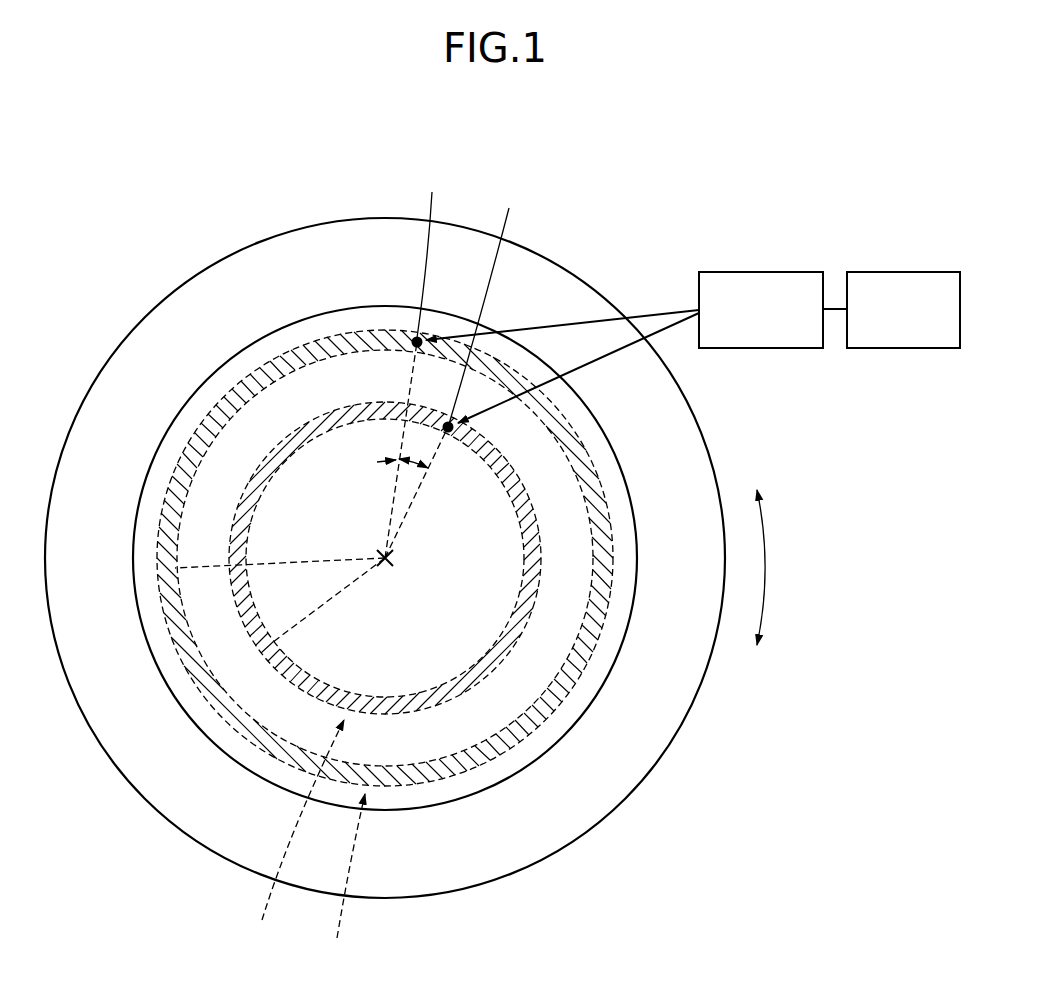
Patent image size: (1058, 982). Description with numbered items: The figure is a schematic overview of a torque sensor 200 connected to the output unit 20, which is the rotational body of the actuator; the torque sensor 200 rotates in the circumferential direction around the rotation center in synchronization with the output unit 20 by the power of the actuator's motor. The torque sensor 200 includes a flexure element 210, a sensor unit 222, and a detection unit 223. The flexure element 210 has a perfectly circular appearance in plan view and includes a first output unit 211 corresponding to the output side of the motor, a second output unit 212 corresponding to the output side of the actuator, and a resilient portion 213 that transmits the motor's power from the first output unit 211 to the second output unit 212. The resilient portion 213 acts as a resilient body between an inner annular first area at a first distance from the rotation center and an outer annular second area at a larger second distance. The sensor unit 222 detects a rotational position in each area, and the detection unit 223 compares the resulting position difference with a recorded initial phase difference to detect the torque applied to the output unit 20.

The torque sensor 200 is at (708, 171).
The output unit 20 is at (571, 198).
The flexure element 210 is at (128, 335).
The second output unit 212 is at (373, 237).
The resilient portion 213 is at (257, 760).
The first output unit 211 is at (430, 668).
The sensor unit 222 is at (770, 271).
The detection unit 223 is at (907, 271).